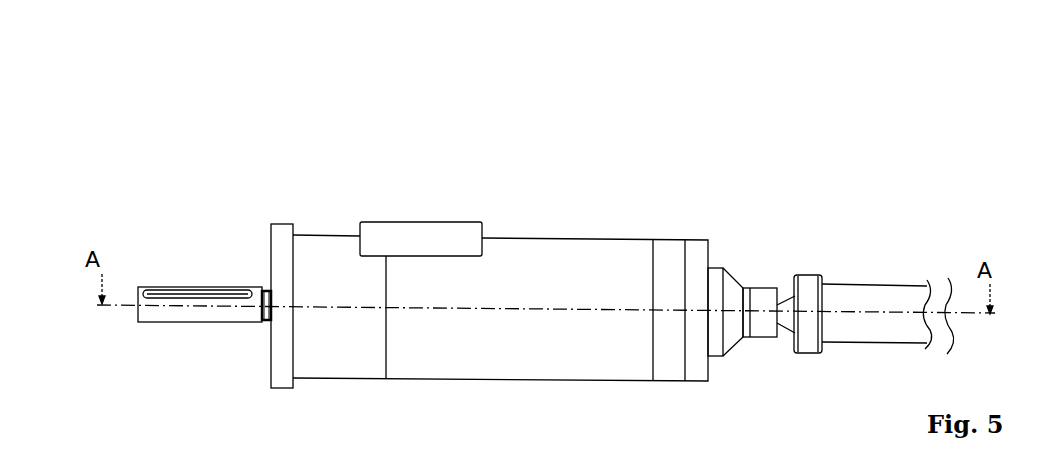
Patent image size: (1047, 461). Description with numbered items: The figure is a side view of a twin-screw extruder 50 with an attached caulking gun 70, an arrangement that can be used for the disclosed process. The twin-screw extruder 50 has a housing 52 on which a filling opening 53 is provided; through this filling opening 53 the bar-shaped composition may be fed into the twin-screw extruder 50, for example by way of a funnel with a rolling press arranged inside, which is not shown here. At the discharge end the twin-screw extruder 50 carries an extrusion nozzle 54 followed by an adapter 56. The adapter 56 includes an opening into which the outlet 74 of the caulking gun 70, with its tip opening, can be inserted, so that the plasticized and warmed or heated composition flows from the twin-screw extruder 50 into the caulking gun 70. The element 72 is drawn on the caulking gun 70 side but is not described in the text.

The twin-screw extruder 50 is at (504, 118).
The housing 52 is at (532, 238).
The filling opening 53 is at (415, 216).
The extrusion nozzle 54 is at (715, 280).
The adapter 56 is at (768, 332).
The caulking gun 70 is at (901, 258).
The shaft 72 is at (867, 337).
The outlet 74 is at (810, 280).